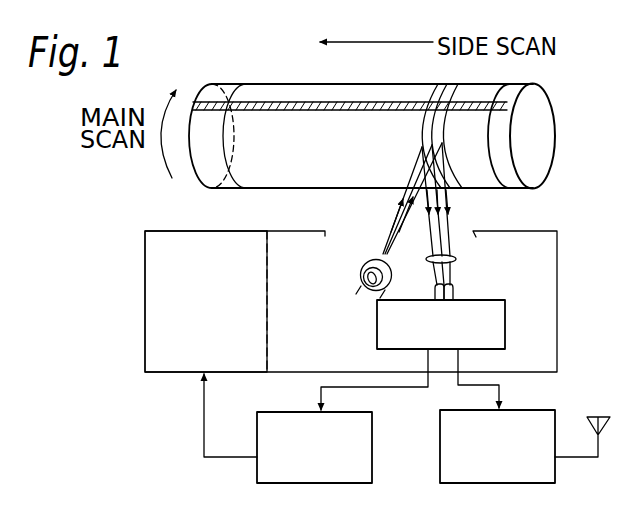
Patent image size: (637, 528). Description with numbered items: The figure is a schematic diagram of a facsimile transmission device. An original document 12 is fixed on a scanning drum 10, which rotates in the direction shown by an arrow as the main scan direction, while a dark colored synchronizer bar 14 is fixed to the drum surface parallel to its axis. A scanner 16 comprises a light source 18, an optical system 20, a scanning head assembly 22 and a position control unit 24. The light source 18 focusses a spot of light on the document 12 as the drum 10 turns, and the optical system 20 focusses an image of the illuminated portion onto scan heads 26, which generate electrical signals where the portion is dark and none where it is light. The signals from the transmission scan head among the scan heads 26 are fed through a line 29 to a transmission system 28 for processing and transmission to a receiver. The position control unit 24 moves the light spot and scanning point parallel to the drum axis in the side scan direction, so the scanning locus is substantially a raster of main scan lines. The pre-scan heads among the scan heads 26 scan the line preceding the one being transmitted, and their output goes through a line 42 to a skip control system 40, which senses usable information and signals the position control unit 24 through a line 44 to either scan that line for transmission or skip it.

The scanning drum 10 is at (548, 110).
The original document 12 is at (303, 184).
The synchronizer bar 14 is at (377, 99).
The scanner 16 is at (558, 292).
The light source 18 is at (356, 275).
The optical system 20 is at (465, 258).
The scanning head assembly 22 is at (507, 325).
The position control unit 24 is at (145, 350).
The scan heads 26 is at (456, 287).
The transmission system 28 is at (497, 485).
The line 29 is at (461, 386).
The skip control system 40 is at (338, 485).
The line 42 is at (402, 388).
The line 44 is at (204, 420).